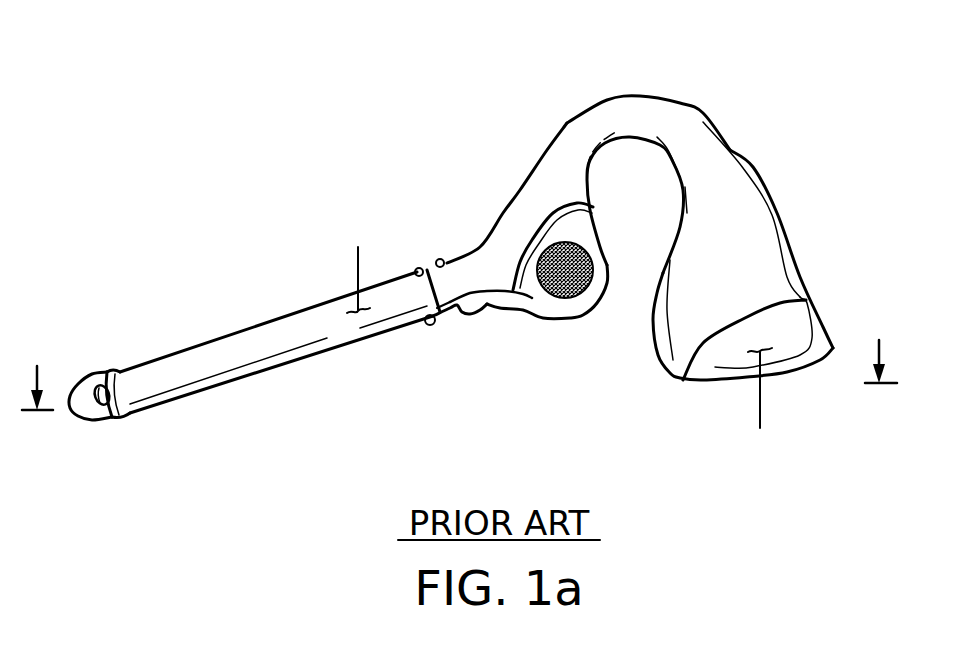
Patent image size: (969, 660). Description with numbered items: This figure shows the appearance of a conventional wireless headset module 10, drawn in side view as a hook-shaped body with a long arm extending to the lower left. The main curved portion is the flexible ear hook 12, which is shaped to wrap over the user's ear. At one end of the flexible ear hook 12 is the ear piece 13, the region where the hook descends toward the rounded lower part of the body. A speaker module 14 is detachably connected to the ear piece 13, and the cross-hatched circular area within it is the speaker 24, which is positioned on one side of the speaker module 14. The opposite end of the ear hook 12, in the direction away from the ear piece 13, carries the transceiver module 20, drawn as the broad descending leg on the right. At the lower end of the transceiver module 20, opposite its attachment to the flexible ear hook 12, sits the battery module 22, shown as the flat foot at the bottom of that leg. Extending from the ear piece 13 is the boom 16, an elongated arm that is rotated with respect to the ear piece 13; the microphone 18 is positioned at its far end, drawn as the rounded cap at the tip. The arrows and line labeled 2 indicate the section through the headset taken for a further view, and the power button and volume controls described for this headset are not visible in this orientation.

The wireless headset module 10 is at (581, 80).
The flexible ear hook 12 is at (685, 112).
The ear piece 13 is at (513, 220).
The speaker module 14 is at (541, 326).
The boom 16 is at (297, 312).
The microphone 18 is at (84, 382).
The transceiver module 20 is at (737, 180).
The battery module 22 is at (730, 367).
The speaker 24 is at (545, 290).
The section line 2 is at (459, 357).